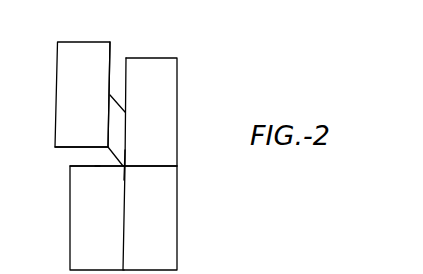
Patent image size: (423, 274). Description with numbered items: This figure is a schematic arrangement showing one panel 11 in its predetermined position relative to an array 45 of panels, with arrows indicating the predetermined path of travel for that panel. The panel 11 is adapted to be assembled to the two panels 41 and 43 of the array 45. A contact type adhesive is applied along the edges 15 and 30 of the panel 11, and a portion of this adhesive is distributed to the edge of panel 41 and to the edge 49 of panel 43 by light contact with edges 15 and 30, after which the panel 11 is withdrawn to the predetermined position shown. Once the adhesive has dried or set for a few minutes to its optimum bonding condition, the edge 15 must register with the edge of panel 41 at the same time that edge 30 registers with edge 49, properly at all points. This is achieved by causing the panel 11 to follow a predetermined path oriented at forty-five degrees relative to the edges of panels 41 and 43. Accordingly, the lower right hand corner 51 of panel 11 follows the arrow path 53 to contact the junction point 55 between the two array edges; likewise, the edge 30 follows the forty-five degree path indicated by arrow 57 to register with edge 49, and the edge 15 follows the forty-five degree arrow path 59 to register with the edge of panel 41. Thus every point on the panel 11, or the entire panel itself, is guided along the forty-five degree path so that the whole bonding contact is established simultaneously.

The panel 11 is at (82, 94).
The edge of panel 15 is at (111, 50).
The edge of panel 30 is at (72, 150).
The panel 41 is at (127, 72).
The panel 43 is at (83, 228).
The array 45 is at (160, 193).
The edge of panel 49 is at (107, 165).
The lower right hand corner 51 is at (123, 163).
The arrow path 53 is at (125, 165).
The junction point 55 is at (125, 166).
The arrow 57 is at (93, 162).
The arrow path 59 is at (112, 98).